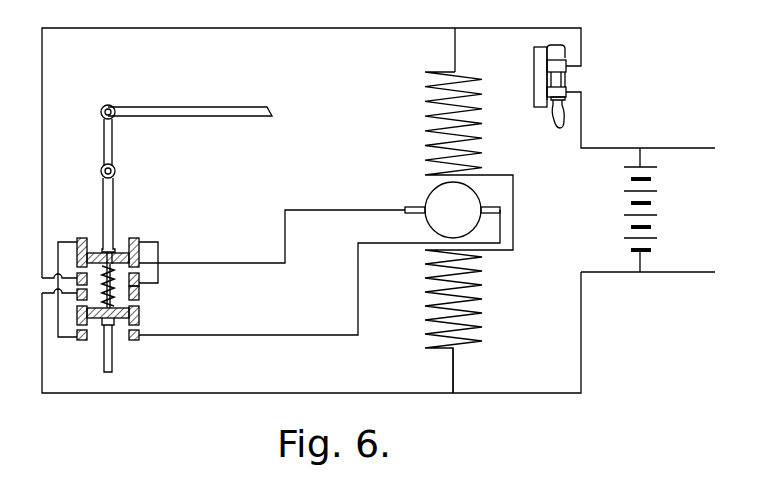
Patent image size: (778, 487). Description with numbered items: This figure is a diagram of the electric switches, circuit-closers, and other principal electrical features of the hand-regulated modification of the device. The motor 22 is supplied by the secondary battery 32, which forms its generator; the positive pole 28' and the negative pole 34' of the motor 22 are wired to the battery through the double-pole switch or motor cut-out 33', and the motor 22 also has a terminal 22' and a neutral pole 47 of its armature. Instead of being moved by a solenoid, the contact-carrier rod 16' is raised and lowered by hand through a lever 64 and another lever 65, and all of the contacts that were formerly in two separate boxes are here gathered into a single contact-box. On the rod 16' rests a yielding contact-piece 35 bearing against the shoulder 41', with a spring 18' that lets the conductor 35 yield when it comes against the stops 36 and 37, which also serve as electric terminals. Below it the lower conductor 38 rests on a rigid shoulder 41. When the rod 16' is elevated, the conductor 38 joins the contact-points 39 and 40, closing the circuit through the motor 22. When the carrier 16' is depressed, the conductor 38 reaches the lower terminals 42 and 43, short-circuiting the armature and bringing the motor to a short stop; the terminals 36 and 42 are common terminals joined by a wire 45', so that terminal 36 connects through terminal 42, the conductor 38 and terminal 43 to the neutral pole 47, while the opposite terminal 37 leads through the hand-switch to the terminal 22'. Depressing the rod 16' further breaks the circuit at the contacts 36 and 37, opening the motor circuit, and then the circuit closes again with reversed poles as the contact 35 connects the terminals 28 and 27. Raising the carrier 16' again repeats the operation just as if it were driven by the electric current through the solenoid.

The rod 16' is at (128, 211).
The spring 18' is at (116, 286).
The motor 22 is at (453, 210).
The terminal 22' is at (408, 201).
The terminal 27 is at (139, 278).
The terminal 28 is at (47, 286).
The positive pole 28' is at (466, 40).
The secondary battery 32 is at (651, 210).
The switch 33' is at (574, 86).
The negative pole 34' is at (462, 381).
The yielding contact-piece 35 is at (128, 260).
The stop 36 is at (82, 237).
The stop 37 is at (135, 237).
The lower conductor 38 is at (139, 312).
The terminal 39 is at (77, 297).
The terminal 40 is at (139, 292).
The rigid shoulder 41 is at (100, 353).
The shoulder 41' is at (119, 238).
The lower terminal 42 is at (82, 341).
The lower terminal 43 is at (134, 341).
The conductor 45' is at (83, 289).
The neutral pole 47 is at (508, 210).
The lever 64 is at (240, 110).
The lever 65 is at (111, 140).